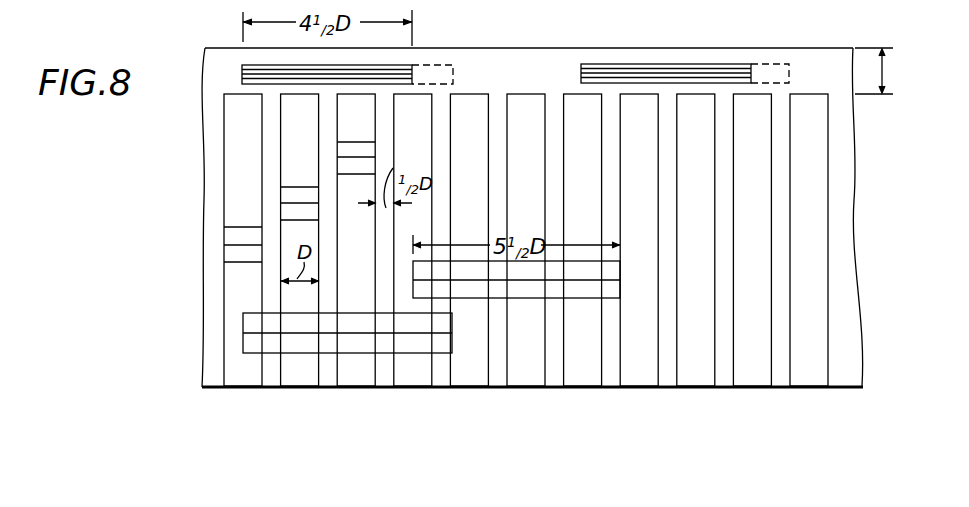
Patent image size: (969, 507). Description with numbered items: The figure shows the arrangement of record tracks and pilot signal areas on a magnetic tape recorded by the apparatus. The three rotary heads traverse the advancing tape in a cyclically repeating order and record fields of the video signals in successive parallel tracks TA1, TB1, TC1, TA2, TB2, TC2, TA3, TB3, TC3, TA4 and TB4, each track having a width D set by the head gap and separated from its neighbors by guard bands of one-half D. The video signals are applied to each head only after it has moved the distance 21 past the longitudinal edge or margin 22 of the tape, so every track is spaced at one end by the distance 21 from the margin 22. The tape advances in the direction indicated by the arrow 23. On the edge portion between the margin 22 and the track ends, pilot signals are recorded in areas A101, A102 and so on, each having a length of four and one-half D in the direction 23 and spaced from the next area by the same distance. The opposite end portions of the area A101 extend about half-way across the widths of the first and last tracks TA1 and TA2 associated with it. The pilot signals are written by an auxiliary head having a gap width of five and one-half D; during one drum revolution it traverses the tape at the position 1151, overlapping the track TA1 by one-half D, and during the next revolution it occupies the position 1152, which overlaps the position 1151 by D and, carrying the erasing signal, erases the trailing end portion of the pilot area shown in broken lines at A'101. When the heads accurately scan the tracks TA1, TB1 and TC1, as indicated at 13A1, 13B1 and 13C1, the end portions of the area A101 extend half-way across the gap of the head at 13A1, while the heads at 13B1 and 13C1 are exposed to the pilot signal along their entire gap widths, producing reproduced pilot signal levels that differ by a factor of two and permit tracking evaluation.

The distance 21 is at (886, 72).
The longitudinal edge or margin 22 is at (546, 40).
The direction of advancement of the tape 23 is at (190, 228).
The pilot signal area A101 is at (258, 70).
The trailing end portion of pilot signal area A'101 is at (446, 51).
The pilot signal area A102 is at (630, 67).
The head 13A scanning position 13A1 is at (228, 256).
The head 13B scanning position 13B1 is at (288, 190).
The head 13C scanning position 13C1 is at (342, 146).
The auxiliary head position 1151 is at (250, 344).
The auxiliary head position 1152 is at (525, 299).
The record track TA1 is at (238, 380).
The record track TB1 is at (295, 380).
The record track TC1 is at (351, 380).
The record track TA2 is at (408, 380).
The record track TB2 is at (465, 380).
The record track TC2 is at (521, 380).
The record track TA3 is at (578, 380).
The record track TB3 is at (634, 380).
The record track TC3 is at (691, 380).
The record track TA4 is at (748, 380).
The record track TB4 is at (804, 380).